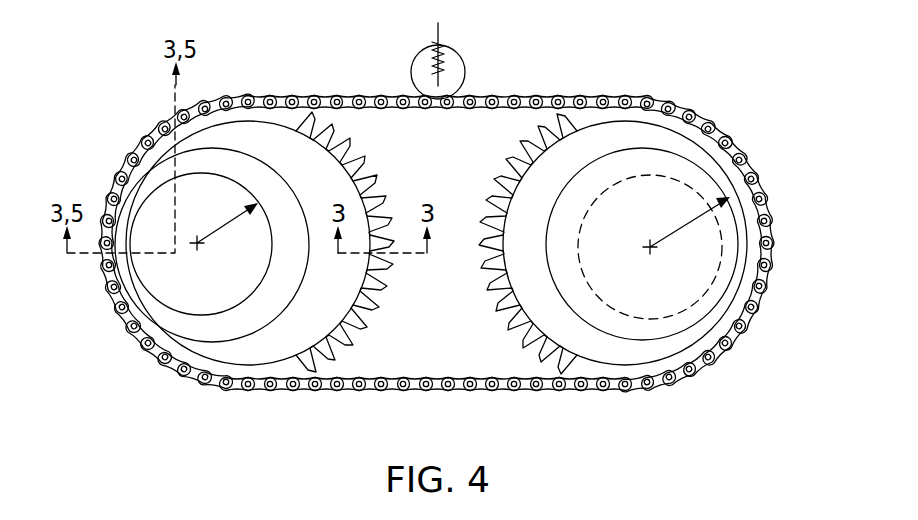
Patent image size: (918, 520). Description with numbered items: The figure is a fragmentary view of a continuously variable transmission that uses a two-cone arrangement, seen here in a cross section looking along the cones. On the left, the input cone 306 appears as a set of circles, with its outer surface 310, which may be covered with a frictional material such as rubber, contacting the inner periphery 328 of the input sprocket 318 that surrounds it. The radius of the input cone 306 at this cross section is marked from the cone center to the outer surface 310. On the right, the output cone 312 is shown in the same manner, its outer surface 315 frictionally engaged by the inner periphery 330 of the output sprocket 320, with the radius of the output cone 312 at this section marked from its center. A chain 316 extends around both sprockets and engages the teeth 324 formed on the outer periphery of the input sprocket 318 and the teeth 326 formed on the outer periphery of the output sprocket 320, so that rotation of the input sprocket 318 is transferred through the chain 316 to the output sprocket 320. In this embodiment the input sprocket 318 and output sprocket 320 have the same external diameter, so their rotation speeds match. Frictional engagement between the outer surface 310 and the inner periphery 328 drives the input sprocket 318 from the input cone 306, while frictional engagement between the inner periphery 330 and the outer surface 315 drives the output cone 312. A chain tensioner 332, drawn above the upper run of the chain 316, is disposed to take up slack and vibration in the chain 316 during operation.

The input cone 306 is at (266, 323).
The outer surface 310 is at (247, 190).
The output cone 312 is at (697, 183).
The outer surface 315 is at (612, 342).
The chain 316 is at (591, 102).
The input sprocket 318 is at (333, 129).
The output sprocket 320 is at (520, 137).
The teeth 324 is at (281, 291).
The teeth 326 is at (623, 267).
The inner periphery 328 is at (224, 358).
The inner periphery 330 is at (550, 335).
The chain tensioner 332 is at (468, 60).